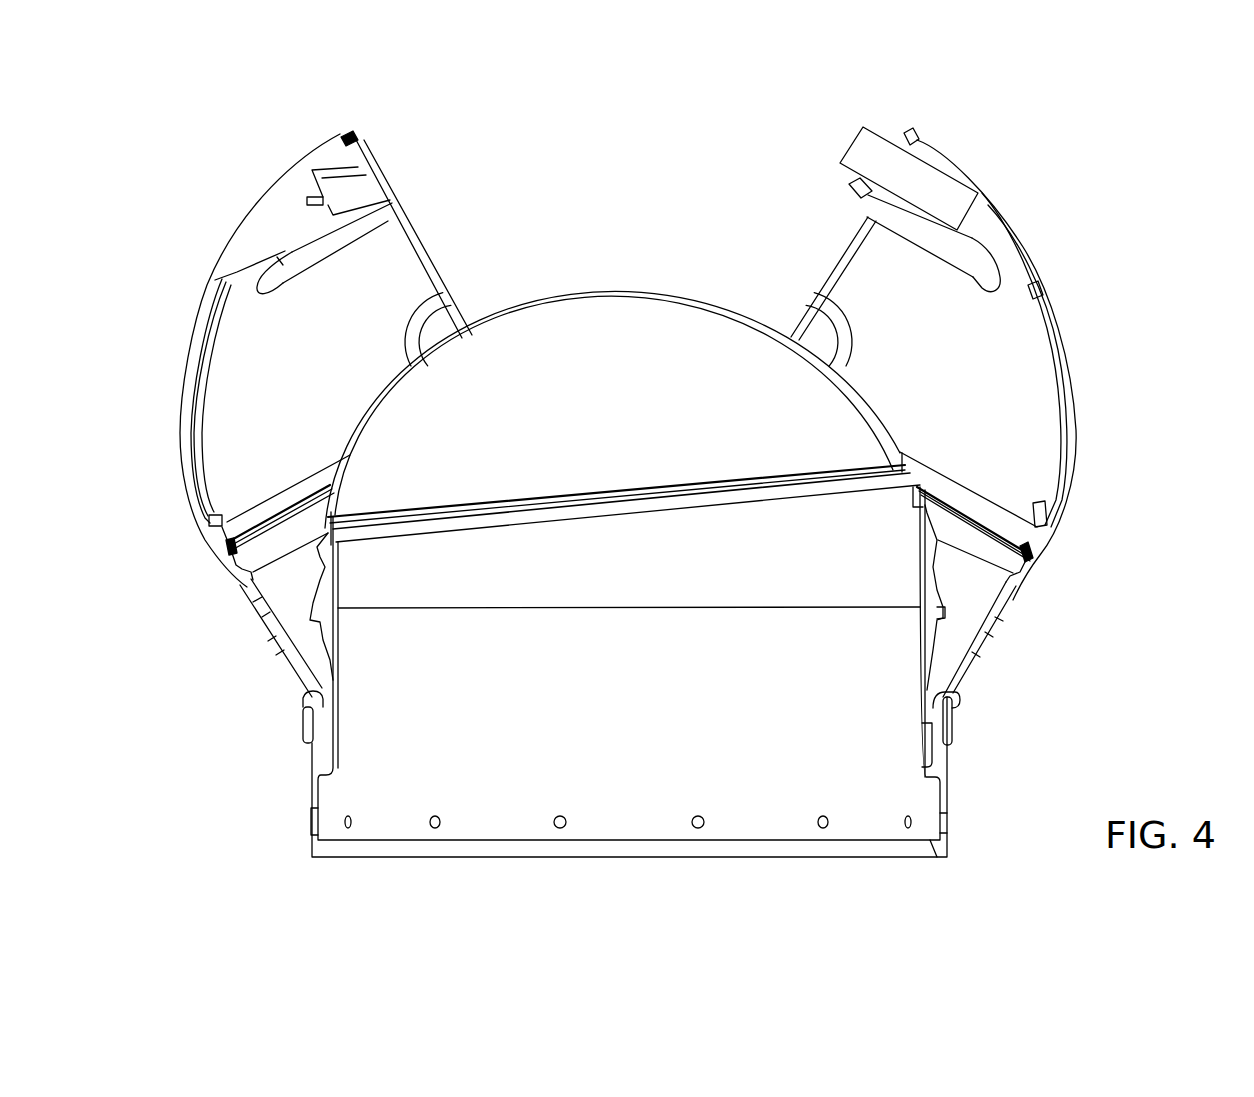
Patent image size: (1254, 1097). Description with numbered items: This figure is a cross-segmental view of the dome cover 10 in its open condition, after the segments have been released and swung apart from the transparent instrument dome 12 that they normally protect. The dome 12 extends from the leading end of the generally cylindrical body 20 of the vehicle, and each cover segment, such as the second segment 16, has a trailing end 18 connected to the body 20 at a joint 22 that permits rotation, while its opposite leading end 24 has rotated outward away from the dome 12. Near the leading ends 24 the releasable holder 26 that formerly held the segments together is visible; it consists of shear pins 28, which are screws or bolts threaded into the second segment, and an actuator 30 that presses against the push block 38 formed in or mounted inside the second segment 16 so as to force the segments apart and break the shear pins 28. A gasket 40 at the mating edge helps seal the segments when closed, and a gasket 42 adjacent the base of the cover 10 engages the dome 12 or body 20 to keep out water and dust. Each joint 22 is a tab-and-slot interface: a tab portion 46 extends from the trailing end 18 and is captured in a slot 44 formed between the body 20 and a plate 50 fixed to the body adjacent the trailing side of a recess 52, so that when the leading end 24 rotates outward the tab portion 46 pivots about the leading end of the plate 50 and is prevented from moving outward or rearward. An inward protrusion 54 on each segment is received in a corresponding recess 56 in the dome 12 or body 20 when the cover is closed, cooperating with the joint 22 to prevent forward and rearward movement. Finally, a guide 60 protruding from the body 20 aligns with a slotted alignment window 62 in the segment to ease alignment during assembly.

The dome cover 10 is at (955, 131).
The instrument dome 12 is at (603, 298).
The second segment 16 is at (400, 262).
The trailing end 18 is at (261, 692).
The body 20 is at (945, 788).
The joint 22 is at (275, 707).
The leading end 24 is at (352, 119).
The releasable holder 26 is at (828, 138).
The shear pin 28 is at (852, 191).
The actuator 30 is at (875, 150).
The push block 38 is at (288, 210).
The gasket 40 is at (359, 147).
The gasket 42 is at (232, 565).
The slot 44 is at (929, 710).
The tab portion 46 is at (955, 697).
The plate 50 is at (952, 722).
The recess 52 is at (308, 709).
The protrusion 54 is at (1005, 580).
The recess 56 is at (931, 566).
The guide 60 is at (938, 613).
The alignment window 62 is at (999, 634).